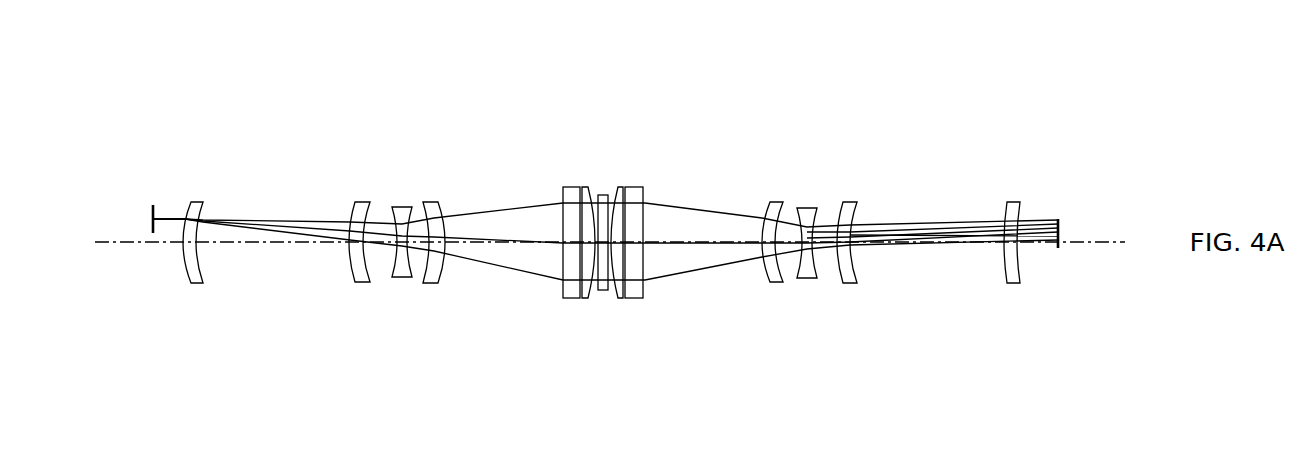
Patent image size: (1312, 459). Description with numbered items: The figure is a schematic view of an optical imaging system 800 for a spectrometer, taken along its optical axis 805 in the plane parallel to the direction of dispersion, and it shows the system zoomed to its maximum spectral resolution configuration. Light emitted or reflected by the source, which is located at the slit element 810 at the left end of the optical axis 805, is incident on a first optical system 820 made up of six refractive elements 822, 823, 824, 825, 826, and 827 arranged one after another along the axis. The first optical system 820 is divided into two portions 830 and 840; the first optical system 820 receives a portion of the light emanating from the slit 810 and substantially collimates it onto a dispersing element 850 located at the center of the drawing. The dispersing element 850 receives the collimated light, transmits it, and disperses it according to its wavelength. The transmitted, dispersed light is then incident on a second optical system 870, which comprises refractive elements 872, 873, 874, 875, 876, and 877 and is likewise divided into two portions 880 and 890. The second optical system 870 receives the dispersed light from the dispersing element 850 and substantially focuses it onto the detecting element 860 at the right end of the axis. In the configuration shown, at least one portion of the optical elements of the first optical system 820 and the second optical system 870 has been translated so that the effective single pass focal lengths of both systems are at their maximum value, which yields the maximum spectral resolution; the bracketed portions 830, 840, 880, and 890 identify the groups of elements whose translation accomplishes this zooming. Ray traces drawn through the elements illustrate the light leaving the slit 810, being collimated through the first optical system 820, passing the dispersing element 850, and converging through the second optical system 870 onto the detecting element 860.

The optical imaging system 800 is at (160, 90).
The optical axis 805 is at (115, 240).
The slit element 810 is at (152, 207).
The detecting element 860 is at (1062, 220).
The first optical system 820 is at (180, 320).
The second optical system 870 is at (610, 320).
The first portion of the first optical system 830 is at (383, 45).
The second portion of the first optical system 840 is at (697, 72).
The dispersing element 850 is at (603, 195).
The second portion of the second optical system 890 is at (785, 192).
The first portion of the second optical system 880 is at (383, 45).
The refractive element 822 is at (194, 285).
The refractive element 823 is at (356, 282).
The refractive element 824 is at (400, 278).
The refractive element 825 is at (446, 282).
The refractive element 826 is at (562, 286).
The refractive element 827 is at (593, 299).
The refractive element 872 is at (612, 299).
The refractive element 873 is at (644, 286).
The refractive element 874 is at (772, 280).
The refractive element 875 is at (814, 278).
The refractive element 876 is at (858, 284).
The refractive element 877 is at (1011, 284).